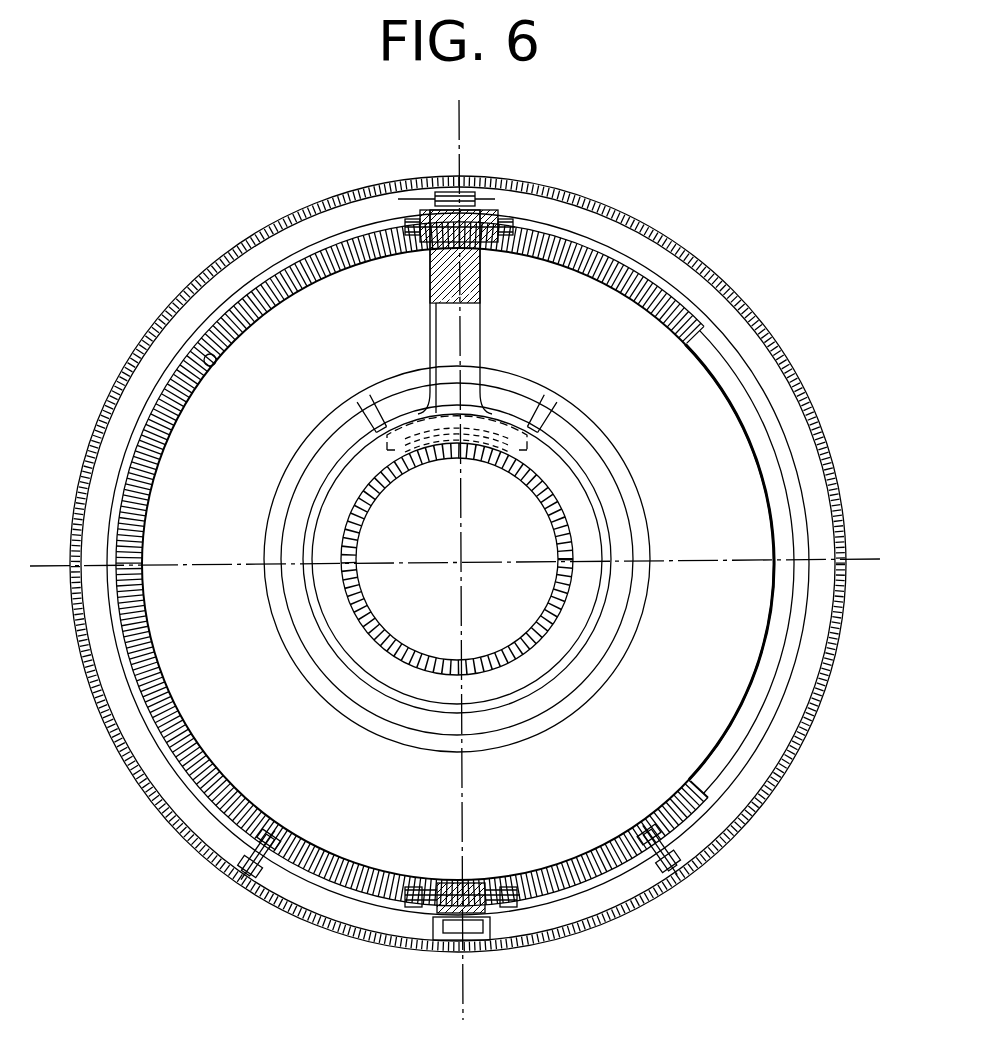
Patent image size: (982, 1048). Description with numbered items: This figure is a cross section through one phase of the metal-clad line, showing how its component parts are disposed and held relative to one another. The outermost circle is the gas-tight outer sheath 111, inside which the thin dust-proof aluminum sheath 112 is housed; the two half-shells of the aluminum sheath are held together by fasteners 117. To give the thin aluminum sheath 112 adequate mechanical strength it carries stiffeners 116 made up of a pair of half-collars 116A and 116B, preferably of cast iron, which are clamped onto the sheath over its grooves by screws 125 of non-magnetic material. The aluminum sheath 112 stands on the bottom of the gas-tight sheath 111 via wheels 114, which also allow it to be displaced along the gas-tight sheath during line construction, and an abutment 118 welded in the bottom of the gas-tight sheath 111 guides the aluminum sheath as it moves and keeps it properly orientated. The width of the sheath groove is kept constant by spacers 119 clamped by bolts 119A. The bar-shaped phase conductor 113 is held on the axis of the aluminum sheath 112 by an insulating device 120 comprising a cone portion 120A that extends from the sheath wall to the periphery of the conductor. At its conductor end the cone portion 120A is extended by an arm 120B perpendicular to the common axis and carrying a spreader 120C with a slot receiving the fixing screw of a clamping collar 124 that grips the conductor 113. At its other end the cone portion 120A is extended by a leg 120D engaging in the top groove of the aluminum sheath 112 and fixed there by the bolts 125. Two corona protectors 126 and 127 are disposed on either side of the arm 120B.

The gas-tight outer sheath 111 is at (548, 178).
The aluminum sheath 112 is at (200, 352).
The phase conductor 113 is at (562, 500).
The wheels 114 is at (262, 878).
The stiffeners 116 is at (604, 236).
The half-collar 116A is at (660, 290).
The half-collar 116B is at (240, 305).
The fasteners 117 is at (445, 190).
The abutment 118 is at (490, 940).
The spacers 119 is at (445, 885).
The bolts 119A is at (415, 912).
The insulating device 120 is at (486, 295).
The cone portion 120A is at (480, 345).
The arm 120B is at (433, 395).
The spreader 120C is at (395, 422).
The leg 120D is at (433, 258).
The clamping collar 124 is at (486, 410).
The screws 125 is at (428, 200).
The corona protector 126 is at (312, 450).
The corona protector 127 is at (274, 495).